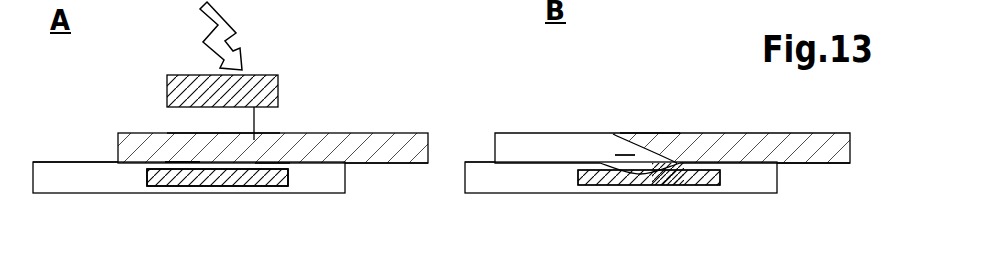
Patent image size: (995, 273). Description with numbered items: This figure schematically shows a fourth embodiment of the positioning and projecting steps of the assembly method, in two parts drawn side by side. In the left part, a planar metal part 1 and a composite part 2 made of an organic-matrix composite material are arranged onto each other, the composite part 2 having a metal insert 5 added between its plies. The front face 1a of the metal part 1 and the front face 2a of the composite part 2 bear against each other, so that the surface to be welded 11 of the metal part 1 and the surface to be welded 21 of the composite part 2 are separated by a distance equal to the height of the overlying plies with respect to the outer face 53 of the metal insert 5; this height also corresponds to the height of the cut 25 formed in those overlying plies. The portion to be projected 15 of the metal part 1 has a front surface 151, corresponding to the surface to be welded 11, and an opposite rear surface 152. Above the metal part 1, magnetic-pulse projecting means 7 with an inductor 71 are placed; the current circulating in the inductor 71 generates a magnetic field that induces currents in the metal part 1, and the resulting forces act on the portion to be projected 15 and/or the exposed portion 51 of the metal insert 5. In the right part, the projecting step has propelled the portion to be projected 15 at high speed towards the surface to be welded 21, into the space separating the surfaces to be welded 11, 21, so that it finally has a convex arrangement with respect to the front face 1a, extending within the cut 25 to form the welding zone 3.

The metal part 1 is at (403, 147).
The front face of the metal part 1a is at (385, 164).
The composite part 2 is at (53, 184).
The front face of the composite part 2a is at (75, 162).
The welding zone 3 is at (667, 187).
The metal insert 5 is at (260, 187).
The magnetic-pulse projecting means 7 is at (264, 76).
The inductor 71 is at (268, 80).
The surface to be welded of the metal part 11 is at (454, 215).
The portion to be projected 15 is at (254, 107).
The surface to be welded of the composite part 21 is at (433, 174).
The cut 25 is at (270, 163).
The exposed portion of the metal insert 51 is at (433, 174).
The outer face of the metal insert 53 is at (227, 184).
The front surface of the portion to be projected 151 is at (180, 162).
The rear surface of the portion to be projected 152 is at (192, 133).